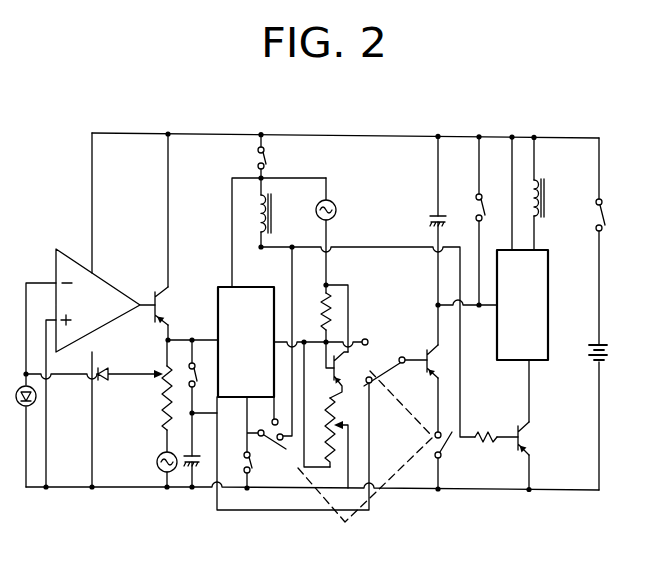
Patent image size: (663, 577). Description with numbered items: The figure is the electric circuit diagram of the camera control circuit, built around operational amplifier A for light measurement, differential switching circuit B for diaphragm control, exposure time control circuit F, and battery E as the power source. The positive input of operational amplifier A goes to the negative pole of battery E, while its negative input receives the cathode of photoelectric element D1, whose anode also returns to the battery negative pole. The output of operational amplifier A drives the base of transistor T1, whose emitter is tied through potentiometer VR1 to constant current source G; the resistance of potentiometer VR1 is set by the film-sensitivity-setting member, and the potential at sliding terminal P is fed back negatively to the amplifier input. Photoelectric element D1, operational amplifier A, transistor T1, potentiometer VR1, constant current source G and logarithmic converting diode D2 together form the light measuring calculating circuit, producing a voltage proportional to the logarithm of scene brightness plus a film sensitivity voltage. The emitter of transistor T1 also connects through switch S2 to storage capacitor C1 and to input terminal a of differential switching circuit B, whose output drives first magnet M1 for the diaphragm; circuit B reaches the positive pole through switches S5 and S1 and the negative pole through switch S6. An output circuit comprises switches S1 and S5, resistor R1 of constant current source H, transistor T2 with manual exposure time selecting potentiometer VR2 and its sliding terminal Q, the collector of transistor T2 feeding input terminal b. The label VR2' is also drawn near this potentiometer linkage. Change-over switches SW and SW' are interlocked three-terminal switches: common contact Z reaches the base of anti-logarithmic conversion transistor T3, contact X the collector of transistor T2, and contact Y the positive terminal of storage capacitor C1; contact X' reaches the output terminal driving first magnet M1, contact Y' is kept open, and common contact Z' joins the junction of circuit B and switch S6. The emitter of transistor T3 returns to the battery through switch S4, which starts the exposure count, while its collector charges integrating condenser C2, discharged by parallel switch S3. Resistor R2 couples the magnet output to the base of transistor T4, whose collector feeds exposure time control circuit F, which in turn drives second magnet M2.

The operational amplifier A is at (105, 300).
The differential switching circuit B is at (246, 342).
The exposure time control circuit F is at (522, 305).
The transistor T1 is at (172, 306).
The transistor T2 is at (327, 375).
The transistor for anti-logarithmic conversion T3 is at (444, 361).
The transistor T4 is at (535, 438).
The photoelectric element D1 is at (19, 409).
The logarithmic converting diode D2 is at (125, 387).
The sliding terminal P is at (157, 373).
The sliding terminal Q is at (339, 424).
The potentiometer VR1 is at (149, 398).
The manual exposure time selecting potentiometer VR2 is at (367, 432).
The variable resistor coupling VR2' is at (322, 503).
The resistor R1 is at (316, 311).
The resistor R2 is at (486, 449).
The storage capacitor C1 is at (201, 451).
The integrating condenser C2 is at (447, 212).
The constant current source G is at (159, 464).
The constant current source H is at (334, 212).
The battery cell power source E is at (605, 354).
The first magnet M1 is at (281, 213).
The second magnet M2 is at (555, 198).
The switch S1 is at (611, 215).
The switch S2 is at (203, 388).
The switch S3 is at (491, 208).
The switch for starting counting the exposure time S4 is at (449, 451).
The switch S5 is at (274, 158).
The switch S6 is at (237, 464).
The change-over switch SW is at (389, 352).
The change-over switch SW' is at (273, 454).
The contact for manual exposure control X is at (365, 332).
The contact for automatic exposure control Y is at (375, 390).
The common contact Z is at (404, 372).
The contact for manual exposure control X' is at (287, 445).
The contact for automatic exposure control Y' is at (279, 408).
The common contact Z' is at (258, 424).
The input terminal a is at (208, 338).
The input terminal b is at (287, 340).